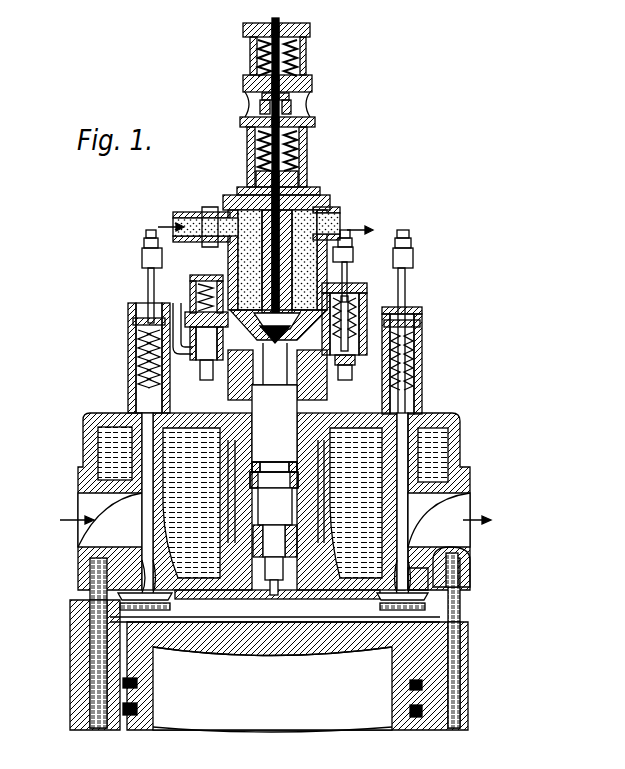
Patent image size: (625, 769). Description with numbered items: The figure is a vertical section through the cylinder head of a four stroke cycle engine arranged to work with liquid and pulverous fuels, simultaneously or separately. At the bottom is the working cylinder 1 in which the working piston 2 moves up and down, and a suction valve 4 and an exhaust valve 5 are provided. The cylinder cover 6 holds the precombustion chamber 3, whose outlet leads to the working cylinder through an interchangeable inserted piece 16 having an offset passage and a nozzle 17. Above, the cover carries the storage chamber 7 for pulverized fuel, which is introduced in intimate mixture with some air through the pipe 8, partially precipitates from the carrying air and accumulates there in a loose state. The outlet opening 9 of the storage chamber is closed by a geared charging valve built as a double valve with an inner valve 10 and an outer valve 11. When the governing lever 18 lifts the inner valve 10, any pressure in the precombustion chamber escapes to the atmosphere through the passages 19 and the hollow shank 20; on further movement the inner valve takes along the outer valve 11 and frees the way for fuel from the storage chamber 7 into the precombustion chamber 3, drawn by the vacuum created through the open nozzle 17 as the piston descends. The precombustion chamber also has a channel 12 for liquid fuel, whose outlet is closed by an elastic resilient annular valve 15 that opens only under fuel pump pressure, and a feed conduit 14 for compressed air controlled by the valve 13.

The working cylinder 1 is at (87, 677).
The working piston 2 is at (290, 660).
The precombustion chamber 3 is at (277, 512).
The suction valve 4 is at (77, 587).
The exhaust valve 5 is at (403, 597).
The cylinder cover 6 is at (447, 413).
The storage chamber 7 is at (300, 236).
The pipe 8 is at (173, 218).
The outlet opening 9 is at (140, 343).
The inner valve 10 is at (187, 320).
The outer valve 11 is at (190, 300).
The channel 12 is at (180, 388).
The valve 13 is at (362, 364).
The feed conduit 14 is at (400, 392).
The annular valve 15 is at (255, 464).
The inserted piece 16 is at (287, 563).
The nozzle 17 is at (303, 591).
The governing lever 18 is at (291, 105).
The passages 19 is at (347, 283).
The hollow shank 20 is at (323, 263).